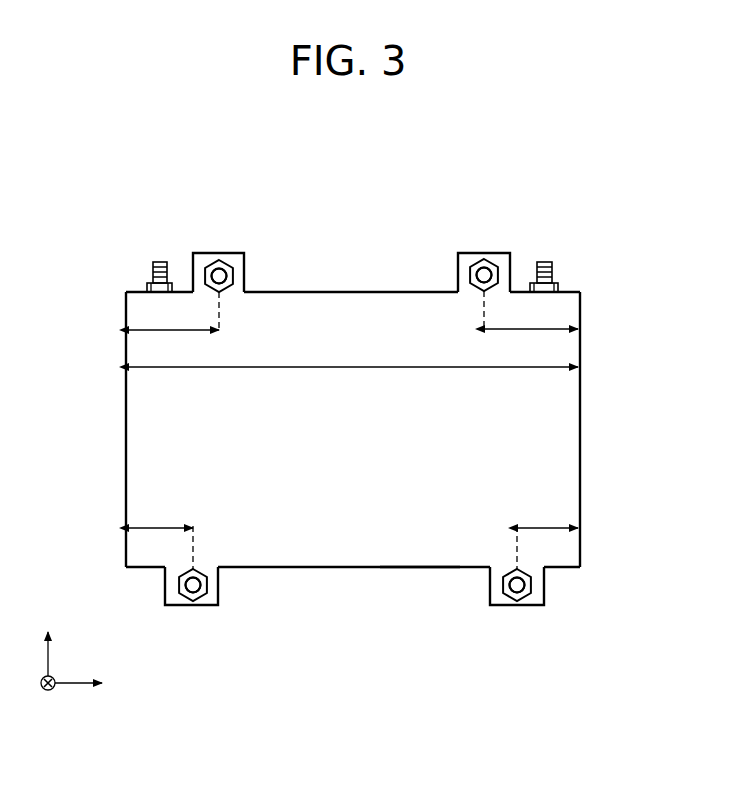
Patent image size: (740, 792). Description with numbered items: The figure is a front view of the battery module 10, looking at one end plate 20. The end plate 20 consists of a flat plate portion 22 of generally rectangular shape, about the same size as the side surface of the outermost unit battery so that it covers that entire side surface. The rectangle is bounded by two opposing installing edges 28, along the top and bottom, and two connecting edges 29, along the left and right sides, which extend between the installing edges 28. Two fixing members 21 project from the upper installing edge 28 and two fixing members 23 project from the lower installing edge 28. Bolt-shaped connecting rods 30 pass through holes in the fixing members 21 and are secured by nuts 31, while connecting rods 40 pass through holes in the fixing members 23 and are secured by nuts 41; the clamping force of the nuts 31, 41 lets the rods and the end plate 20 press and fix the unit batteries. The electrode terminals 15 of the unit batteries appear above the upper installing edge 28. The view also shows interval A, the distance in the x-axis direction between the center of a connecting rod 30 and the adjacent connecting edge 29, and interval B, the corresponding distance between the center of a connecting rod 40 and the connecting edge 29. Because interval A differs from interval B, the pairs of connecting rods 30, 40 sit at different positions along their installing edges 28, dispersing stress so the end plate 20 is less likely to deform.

The battery module 10 is at (369, 282).
The electrode terminal 15 is at (150, 268).
The end plate 20 is at (589, 411).
The fixing member 21 is at (193, 262).
The flat plate portion 22 is at (347, 547).
The fixing member 23 is at (170, 602).
The installing edge 28 is at (413, 290).
The connecting edge 29 is at (126, 447).
The connecting rod 30 is at (224, 273).
The nut 31 is at (208, 260).
The connecting rod 40 is at (197, 588).
The nut 41 is at (192, 606).